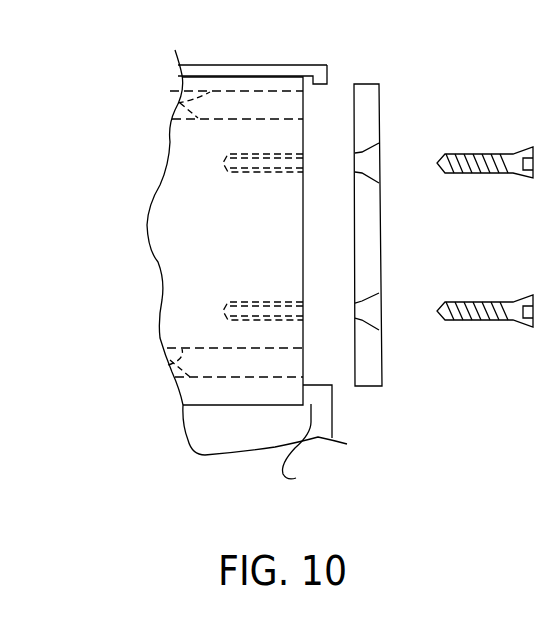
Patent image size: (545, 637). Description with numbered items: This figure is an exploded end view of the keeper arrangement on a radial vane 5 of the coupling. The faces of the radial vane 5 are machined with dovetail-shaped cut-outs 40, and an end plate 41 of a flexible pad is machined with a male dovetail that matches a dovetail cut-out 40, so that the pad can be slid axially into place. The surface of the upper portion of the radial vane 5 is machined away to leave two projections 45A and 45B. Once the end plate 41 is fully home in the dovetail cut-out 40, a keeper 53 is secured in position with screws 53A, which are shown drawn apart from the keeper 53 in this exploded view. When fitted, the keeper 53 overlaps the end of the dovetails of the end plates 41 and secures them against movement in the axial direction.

The radial vane 5 is at (226, 72).
The end plate 41 is at (262, 85).
The projection 45A is at (313, 72).
The projection 45B is at (310, 437).
The dovetail cut-out 40 is at (176, 100).
The keeper 53 is at (366, 97).
The screws 53A is at (472, 173).